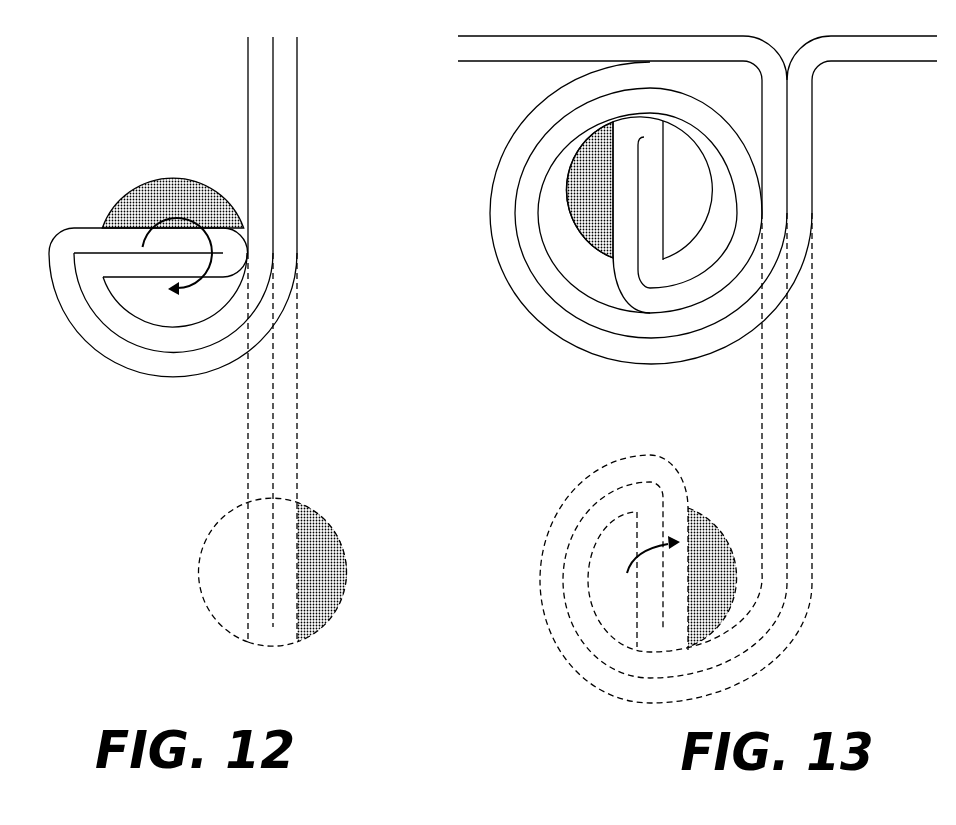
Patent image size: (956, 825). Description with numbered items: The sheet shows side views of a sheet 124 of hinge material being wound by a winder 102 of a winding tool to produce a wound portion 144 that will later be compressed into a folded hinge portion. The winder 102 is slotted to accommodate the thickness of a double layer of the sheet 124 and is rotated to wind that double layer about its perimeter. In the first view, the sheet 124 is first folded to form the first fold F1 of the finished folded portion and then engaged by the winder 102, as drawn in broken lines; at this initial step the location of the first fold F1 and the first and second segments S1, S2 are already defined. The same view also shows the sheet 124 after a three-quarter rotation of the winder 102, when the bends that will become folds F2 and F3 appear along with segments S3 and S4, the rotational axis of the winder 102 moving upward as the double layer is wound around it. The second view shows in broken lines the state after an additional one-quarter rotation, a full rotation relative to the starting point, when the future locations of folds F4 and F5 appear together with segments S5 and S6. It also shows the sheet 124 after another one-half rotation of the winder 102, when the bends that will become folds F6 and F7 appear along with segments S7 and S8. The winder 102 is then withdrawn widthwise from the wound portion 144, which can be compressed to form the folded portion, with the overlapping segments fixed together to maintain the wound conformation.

In FIG. 12, the sheet of hinge material 124 is at (256, 108).
In FIG. 13, the sheet of hinge material 124 is at (501, 46).
In FIG. 13, the wound portion of hinge material 144 is at (503, 170).
In FIG. 12, the winder 102 is at (130, 205).
In FIG. 13, the winder 102 is at (590, 217).
In FIG. 12, the first fold F1 is at (280, 633).
In FIG. 12, the fold F2 is at (86, 262).
In FIG. 12, the fold F3 is at (63, 250).
In FIG. 13, the fold F4 is at (660, 667).
In FIG. 13, the fold F5 is at (663, 693).
In FIG. 13, the fold F6 is at (643, 328).
In FIG. 13, the fold F7 is at (645, 353).
In FIG. 12, the first segment S1 is at (263, 547).
In FIG. 12, the second segment S2 is at (283, 593).
In FIG. 12, the segment S3 is at (183, 346).
In FIG. 12, the segment S4 is at (198, 365).
In FIG. 13, the segment S5 is at (768, 607).
In FIG. 13, the segment S6 is at (768, 648).
In FIG. 13, the segment S7 is at (773, 188).
In FIG. 13, the segment S8 is at (812, 203).